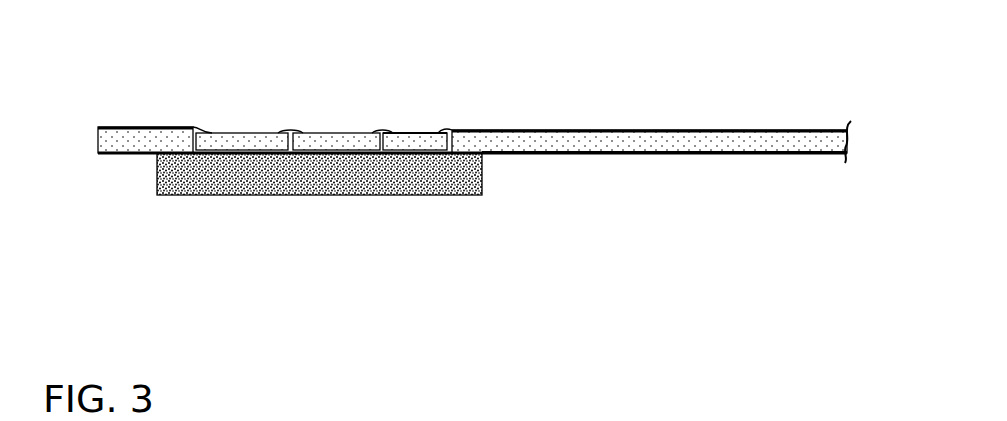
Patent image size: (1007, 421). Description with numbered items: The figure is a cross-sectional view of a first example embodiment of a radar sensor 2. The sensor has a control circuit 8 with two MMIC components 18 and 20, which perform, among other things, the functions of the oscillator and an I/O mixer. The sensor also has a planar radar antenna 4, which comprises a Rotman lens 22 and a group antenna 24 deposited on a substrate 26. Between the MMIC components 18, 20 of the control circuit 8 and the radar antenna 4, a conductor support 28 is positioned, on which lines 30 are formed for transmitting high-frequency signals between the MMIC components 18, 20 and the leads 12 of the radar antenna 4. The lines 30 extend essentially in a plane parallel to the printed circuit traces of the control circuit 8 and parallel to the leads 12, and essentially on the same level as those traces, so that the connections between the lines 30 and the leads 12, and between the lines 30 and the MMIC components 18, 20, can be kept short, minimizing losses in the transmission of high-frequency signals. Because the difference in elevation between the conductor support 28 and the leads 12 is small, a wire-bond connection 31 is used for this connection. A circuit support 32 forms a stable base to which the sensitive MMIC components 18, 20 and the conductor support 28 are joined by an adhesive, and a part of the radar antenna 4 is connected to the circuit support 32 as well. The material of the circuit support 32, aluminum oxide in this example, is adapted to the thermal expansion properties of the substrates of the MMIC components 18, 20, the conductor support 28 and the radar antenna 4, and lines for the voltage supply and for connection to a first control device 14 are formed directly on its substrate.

The sensor device 2 is at (140, 215).
The radar antenna 4 is at (753, 108).
The control circuit 8 is at (303, 112).
The lead 12 is at (490, 129).
The first control device 14 is at (144, 112).
The MMIC component 18 is at (247, 142).
The MMIC component 20 is at (355, 142).
The Rotman lens 22 is at (632, 129).
The group antenna 24 is at (823, 131).
The substrate 26 is at (552, 143).
The conductor support 28 is at (397, 142).
The lines 30 is at (418, 135).
The wire-bond connection 31 is at (444, 129).
The circuit support 32 is at (282, 182).